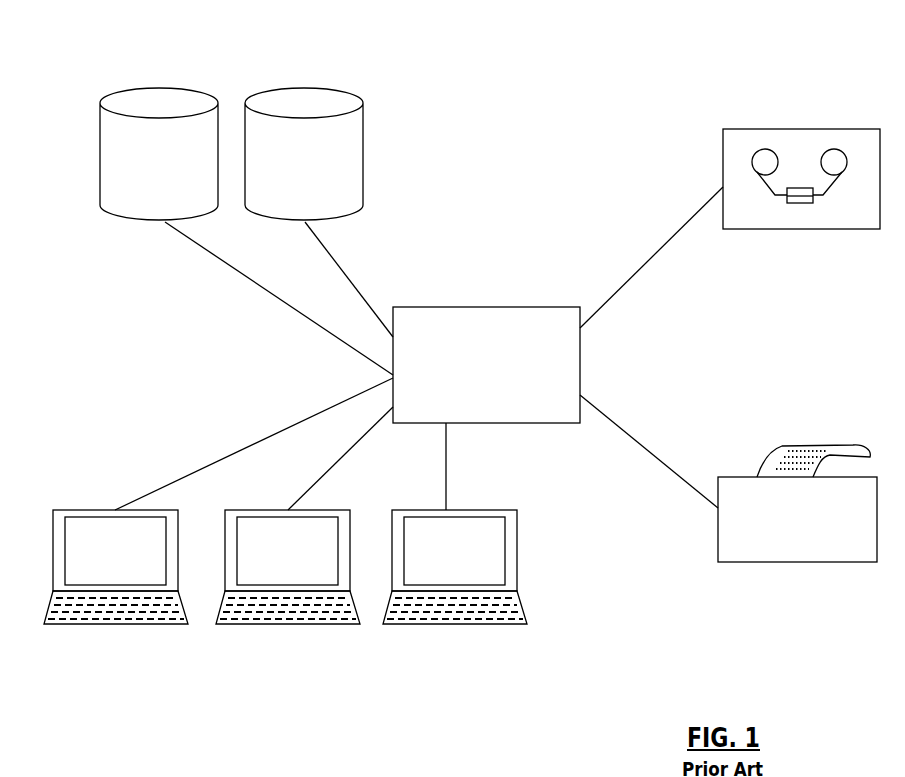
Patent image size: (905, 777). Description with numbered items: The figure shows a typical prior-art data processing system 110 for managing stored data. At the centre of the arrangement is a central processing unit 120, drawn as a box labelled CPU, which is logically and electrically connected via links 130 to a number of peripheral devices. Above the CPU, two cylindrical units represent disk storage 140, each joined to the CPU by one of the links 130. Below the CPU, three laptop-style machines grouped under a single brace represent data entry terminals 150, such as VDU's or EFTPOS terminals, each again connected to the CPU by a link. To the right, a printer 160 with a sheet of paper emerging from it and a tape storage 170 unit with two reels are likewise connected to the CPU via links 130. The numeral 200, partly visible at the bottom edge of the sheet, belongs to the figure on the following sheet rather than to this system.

The data processing system 110 is at (93, 82).
The central processing unit 120 is at (510, 307).
The links 130 is at (302, 315).
The disk storage 140 is at (265, 80).
The data entry terminals 150 is at (526, 641).
The printer 160 is at (808, 562).
The tape storage 170 is at (810, 129).
The system (next figure) 200 is at (222, 771).